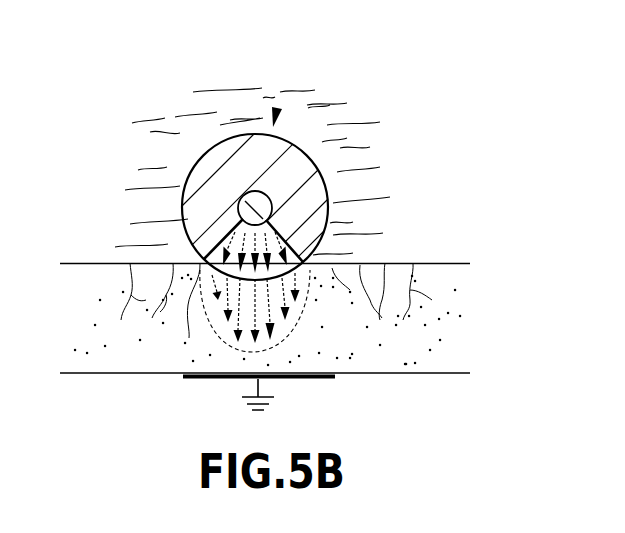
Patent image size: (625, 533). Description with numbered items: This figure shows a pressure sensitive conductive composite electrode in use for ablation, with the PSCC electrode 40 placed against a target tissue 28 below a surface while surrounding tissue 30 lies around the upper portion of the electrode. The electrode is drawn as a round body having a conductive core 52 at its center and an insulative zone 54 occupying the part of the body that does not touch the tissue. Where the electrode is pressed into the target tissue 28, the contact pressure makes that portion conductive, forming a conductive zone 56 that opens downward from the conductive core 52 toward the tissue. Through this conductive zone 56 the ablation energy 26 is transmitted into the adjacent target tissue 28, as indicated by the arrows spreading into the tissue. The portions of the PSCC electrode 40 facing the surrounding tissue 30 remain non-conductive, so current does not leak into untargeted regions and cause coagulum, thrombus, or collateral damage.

The ablation energy 26 is at (320, 268).
The target tissue 28 is at (442, 327).
The surrounding tissue 30 is at (368, 150).
The PSCC electrode 40 is at (277, 108).
The conductive core 52 is at (262, 212).
The insulative zone 54 is at (196, 168).
The conductive zone 56 is at (288, 242).